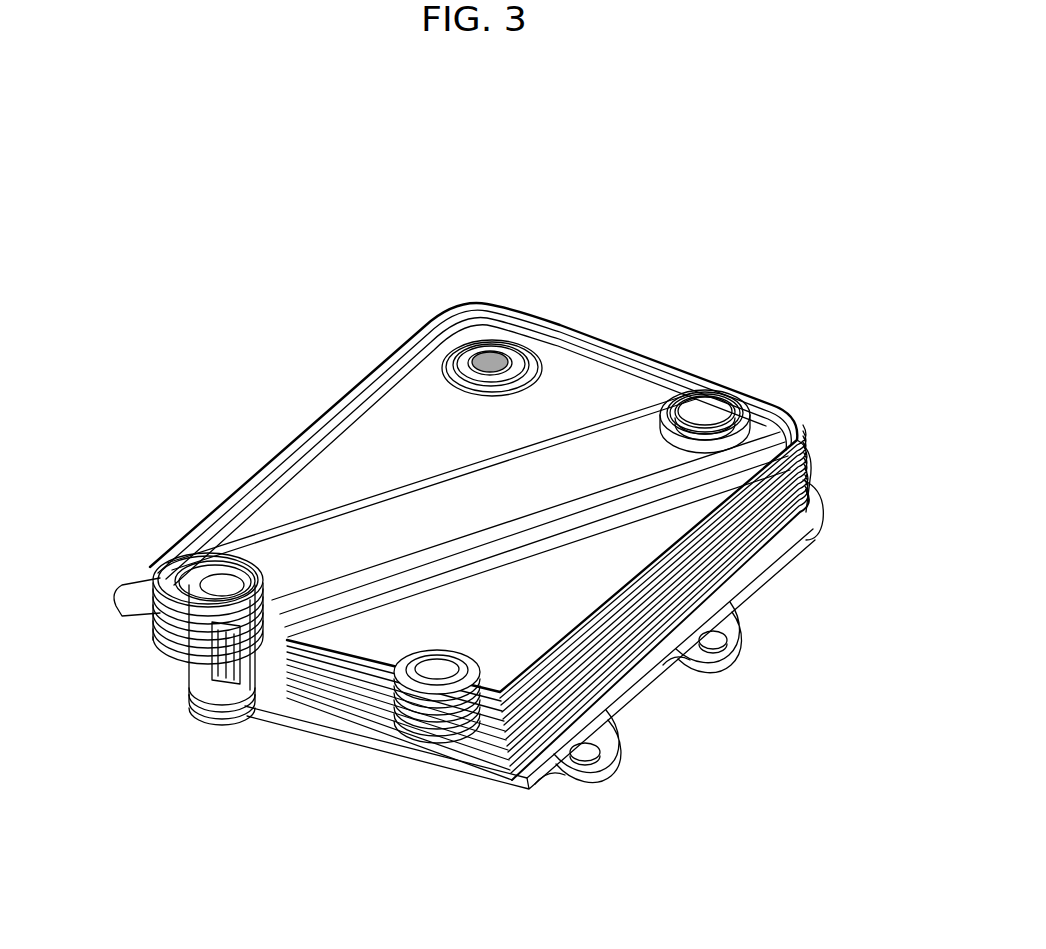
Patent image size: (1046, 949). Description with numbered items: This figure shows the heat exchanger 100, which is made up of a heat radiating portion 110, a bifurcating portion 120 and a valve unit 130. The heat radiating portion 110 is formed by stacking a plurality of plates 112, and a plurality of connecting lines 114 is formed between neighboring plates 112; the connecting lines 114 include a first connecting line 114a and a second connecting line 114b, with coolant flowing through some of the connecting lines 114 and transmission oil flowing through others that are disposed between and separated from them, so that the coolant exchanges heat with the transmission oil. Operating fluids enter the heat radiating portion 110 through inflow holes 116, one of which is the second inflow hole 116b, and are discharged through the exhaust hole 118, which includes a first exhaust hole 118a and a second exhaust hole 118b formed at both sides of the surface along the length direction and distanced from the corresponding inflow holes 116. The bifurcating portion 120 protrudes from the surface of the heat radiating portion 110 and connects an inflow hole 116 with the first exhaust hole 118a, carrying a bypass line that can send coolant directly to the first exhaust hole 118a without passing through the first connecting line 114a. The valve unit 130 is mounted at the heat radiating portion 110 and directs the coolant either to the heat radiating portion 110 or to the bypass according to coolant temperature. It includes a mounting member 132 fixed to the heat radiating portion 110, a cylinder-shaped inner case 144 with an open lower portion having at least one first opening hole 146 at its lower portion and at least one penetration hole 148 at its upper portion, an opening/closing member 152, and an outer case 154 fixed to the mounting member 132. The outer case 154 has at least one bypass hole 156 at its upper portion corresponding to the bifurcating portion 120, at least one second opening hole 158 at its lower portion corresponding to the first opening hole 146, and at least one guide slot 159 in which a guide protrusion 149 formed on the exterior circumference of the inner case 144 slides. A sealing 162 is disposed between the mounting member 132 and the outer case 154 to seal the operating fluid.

The heat exchanger 100 is at (470, 142).
The heat radiating portion 110 is at (610, 703).
The plates 112 is at (730, 550).
The connecting lines 114 is at (380, 782).
The first connecting line 114a is at (320, 692).
The second connecting line 114b is at (352, 700).
The inflow holes 116 is at (535, 352).
The second inflow hole 116b is at (493, 340).
The exhaust hole 118 is at (705, 392).
The first exhaust hole 118a is at (726, 398).
The second exhaust hole 118b is at (447, 627).
The bifurcating portion 120 is at (415, 515).
The valve unit 130 is at (164, 628).
The mounting member 132 is at (210, 703).
The inner case 144 is at (172, 648).
The first opening hole 146 is at (172, 688).
The penetration hole 148 is at (185, 553).
The guide protrusion 149 is at (250, 690).
The opening/closing member 152 is at (190, 700).
The outer case 154 is at (236, 578).
The bypass hole 156 is at (160, 632).
The second opening hole 158 is at (152, 580).
The guide slot 159 is at (235, 700).
The sealing 162 is at (195, 705).